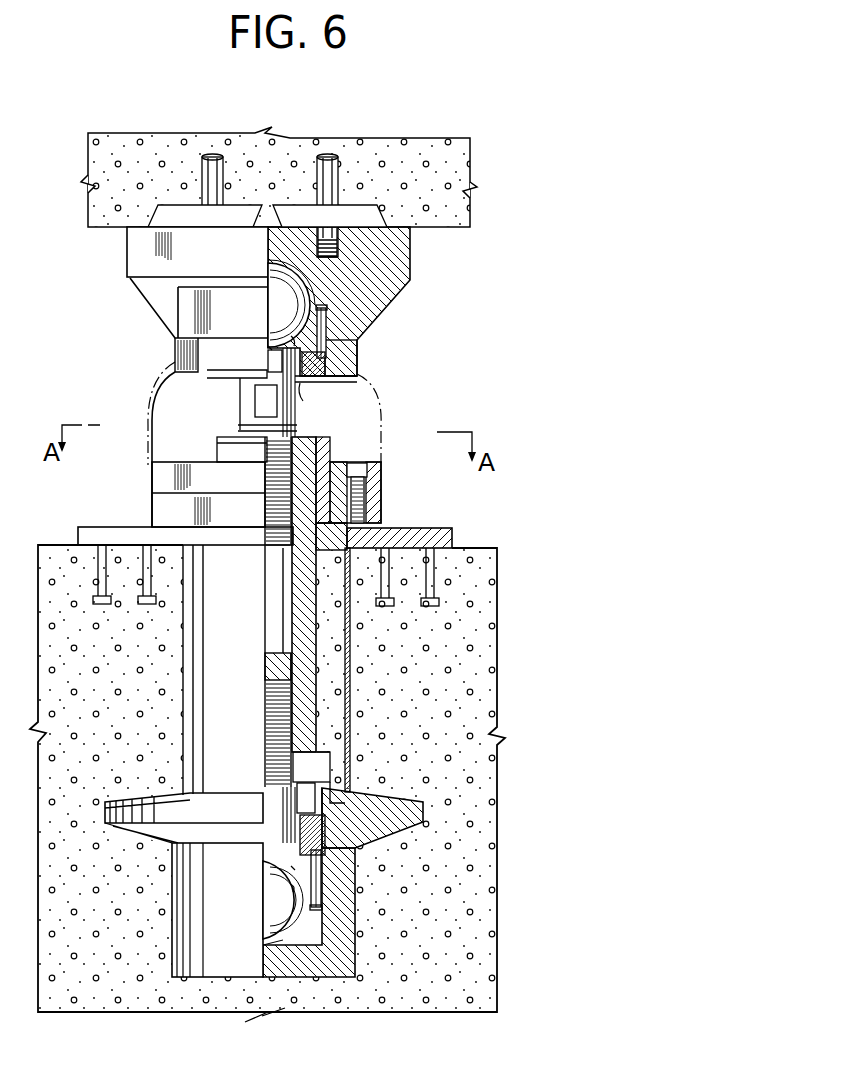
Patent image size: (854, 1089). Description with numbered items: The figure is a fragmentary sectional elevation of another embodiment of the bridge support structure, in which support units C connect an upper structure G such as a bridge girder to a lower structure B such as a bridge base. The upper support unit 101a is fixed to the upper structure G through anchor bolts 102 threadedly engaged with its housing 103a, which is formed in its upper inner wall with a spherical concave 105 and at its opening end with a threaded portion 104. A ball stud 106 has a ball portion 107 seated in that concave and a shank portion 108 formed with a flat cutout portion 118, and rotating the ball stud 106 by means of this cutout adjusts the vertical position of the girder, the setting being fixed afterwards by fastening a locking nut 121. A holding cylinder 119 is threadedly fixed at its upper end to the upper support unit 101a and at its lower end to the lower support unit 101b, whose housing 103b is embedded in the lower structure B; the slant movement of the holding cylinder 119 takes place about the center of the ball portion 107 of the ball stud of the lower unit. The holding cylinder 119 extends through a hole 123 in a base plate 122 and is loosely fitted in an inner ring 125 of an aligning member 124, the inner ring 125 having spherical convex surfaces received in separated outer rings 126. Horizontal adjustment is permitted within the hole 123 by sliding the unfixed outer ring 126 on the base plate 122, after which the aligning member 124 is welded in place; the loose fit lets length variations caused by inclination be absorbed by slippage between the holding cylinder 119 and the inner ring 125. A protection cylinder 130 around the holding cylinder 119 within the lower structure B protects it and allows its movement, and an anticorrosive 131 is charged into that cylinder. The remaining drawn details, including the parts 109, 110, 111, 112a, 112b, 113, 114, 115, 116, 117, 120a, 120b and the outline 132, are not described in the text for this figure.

The upper support unit 101a is at (120, 249).
The lower support unit 101b is at (163, 902).
The anchor bolts 102 is at (323, 165).
The housing 103a is at (393, 254).
The housing 103b is at (347, 958).
The threaded portion 104 is at (345, 350).
The spherical concave 105 is at (286, 268).
The ball stud 106 is at (270, 348).
The ball portion 107 is at (280, 288).
The shank portion 108 is at (270, 482).
The pin seat 109 is at (325, 313).
The pin 110 is at (311, 313).
The ball neck 111 is at (293, 338).
The upper connector 112a is at (305, 384).
The lower connector 112b is at (329, 814).
The spacer block 113 is at (327, 363).
The shaft 114 is at (292, 381).
The shelf 115 is at (262, 375).
The bracket 116 is at (273, 358).
The clamp bracket 117 is at (312, 383).
The flat cutout portion 118 is at (255, 401).
The holding cylinder 119 is at (303, 642).
The upper nut 120a is at (283, 508).
The lower nut 120b is at (287, 700).
The locking nut 121 is at (217, 447).
The base plate 122 is at (449, 536).
The hole 123 is at (338, 548).
The aligning member 124 is at (165, 475).
The inner ring 125 is at (332, 474).
The outer ring 126 is at (380, 485).
The protection cylinder 130 is at (347, 682).
The anticorrosive 131 is at (333, 614).
The envelope 132 is at (383, 414).
The lower structure B is at (487, 647).
The support units C is at (238, 597).
The upper structure G is at (458, 168).